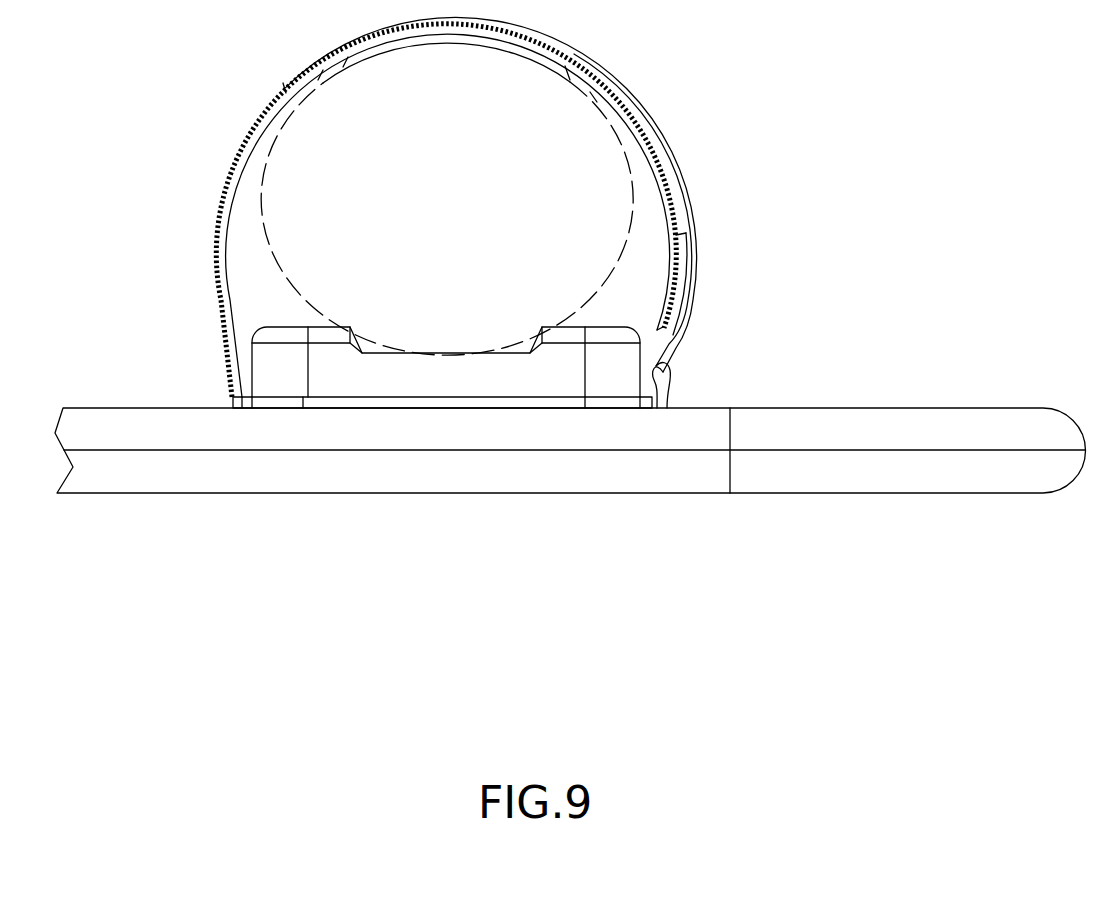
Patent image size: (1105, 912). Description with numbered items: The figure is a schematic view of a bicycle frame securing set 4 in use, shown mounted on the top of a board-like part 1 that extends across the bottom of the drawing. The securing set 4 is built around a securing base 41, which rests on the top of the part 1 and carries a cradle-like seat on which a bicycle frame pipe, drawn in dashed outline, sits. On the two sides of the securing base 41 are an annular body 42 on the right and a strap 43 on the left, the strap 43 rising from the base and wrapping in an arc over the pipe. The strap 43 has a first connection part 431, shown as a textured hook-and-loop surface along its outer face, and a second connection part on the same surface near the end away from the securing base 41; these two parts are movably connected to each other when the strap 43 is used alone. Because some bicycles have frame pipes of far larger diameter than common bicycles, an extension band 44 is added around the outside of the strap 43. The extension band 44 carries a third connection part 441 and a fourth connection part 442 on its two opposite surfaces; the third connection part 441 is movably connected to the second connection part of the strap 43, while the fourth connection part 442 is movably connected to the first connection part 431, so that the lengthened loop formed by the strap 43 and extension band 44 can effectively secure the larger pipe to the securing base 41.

The board 1 is at (1016, 400).
The bicycle frame securing set 4 is at (727, 247).
The securing base 41 is at (347, 375).
The annular body 42 is at (677, 355).
The strap 43 is at (418, 210).
The first connection part 431 is at (255, 125).
The extension band 44 is at (490, 194).
The third connection part 441 is at (675, 288).
The fourth connection part 442 is at (323, 73).